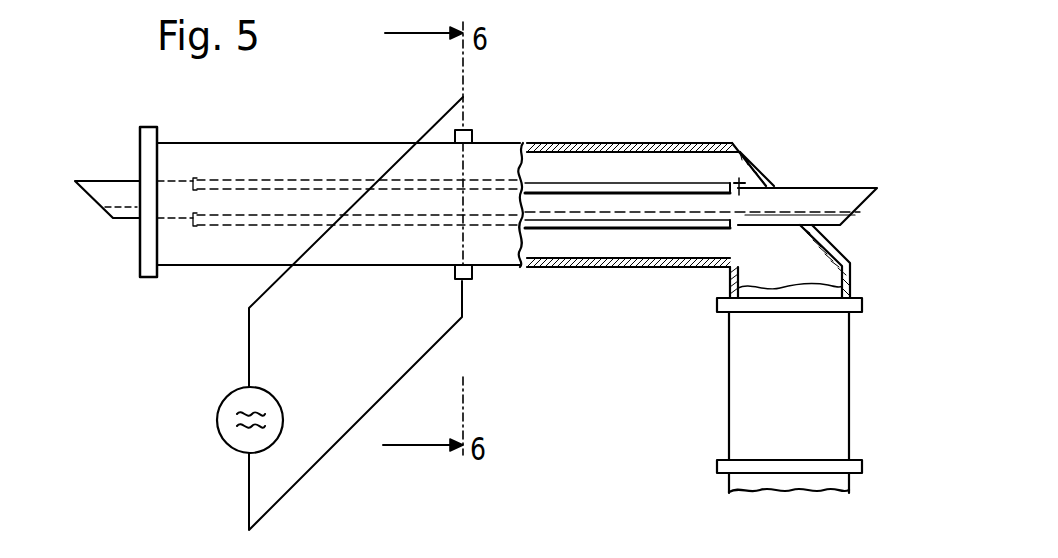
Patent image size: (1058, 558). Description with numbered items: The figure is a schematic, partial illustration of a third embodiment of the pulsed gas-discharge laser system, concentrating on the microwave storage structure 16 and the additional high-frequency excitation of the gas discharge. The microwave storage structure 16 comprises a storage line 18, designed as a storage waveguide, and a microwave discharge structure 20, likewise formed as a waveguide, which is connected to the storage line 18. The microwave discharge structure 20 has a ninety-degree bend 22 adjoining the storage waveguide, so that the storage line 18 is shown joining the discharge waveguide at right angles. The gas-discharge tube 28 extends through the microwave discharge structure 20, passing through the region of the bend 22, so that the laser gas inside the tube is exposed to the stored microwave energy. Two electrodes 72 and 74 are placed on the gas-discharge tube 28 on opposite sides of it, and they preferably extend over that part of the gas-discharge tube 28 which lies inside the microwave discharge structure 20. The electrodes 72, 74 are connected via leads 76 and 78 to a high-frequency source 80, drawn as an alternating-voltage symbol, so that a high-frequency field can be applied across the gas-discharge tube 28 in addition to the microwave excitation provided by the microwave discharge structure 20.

The microwave storage structure 16 is at (690, 303).
The storage line 18 is at (748, 399).
The microwave discharge structure 20 is at (602, 165).
The 90° bend 22 is at (762, 180).
The gas-discharge tube 28 is at (728, 182).
The electrode 72 is at (547, 188).
The electrode 74 is at (547, 225).
The lead 76 is at (267, 295).
The lead 78 is at (277, 507).
The high-frequency source 80 is at (217, 420).